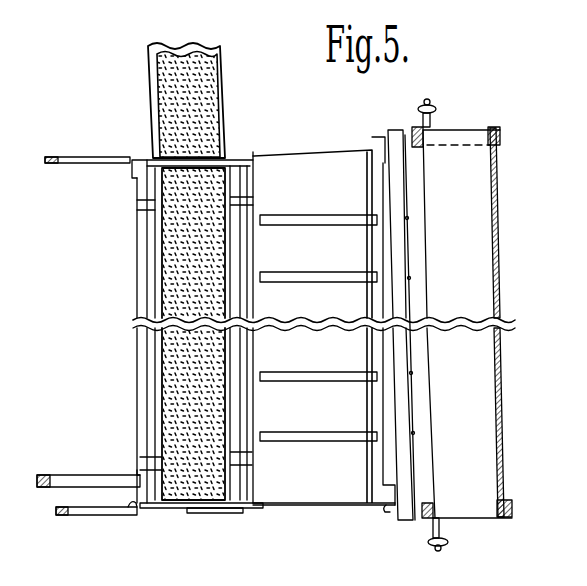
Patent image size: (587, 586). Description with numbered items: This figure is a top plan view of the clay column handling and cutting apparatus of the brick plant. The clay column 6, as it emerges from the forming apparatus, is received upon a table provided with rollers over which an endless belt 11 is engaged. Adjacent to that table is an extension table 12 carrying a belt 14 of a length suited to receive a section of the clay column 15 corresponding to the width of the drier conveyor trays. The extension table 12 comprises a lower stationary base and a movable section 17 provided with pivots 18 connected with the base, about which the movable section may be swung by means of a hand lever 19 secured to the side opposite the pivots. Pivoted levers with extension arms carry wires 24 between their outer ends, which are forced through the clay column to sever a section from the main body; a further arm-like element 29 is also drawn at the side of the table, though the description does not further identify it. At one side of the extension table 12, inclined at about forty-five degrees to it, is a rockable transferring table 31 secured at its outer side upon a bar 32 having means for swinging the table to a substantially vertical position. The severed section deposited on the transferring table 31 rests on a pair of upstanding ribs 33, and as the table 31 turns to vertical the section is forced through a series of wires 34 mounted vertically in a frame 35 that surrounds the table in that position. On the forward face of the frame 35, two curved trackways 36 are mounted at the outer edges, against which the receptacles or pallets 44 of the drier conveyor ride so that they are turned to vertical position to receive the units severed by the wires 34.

The clay column 6 is at (216, 90).
The endless belt 11 is at (223, 60).
The extension table 12 is at (261, 510).
The belt 14 is at (154, 392).
The section of the clay column 15 is at (212, 195).
The movable section 17 is at (252, 220).
The pivots 18 is at (239, 514).
The hand lever 19 is at (45, 476).
The wires 24 is at (130, 515).
The arm 29 is at (127, 165).
The transferring table 31 is at (317, 497).
The bar 32 is at (384, 513).
The upstanding ribs 33 is at (310, 220).
The wires 34 is at (410, 278).
The frame 35 is at (403, 526).
The curved trackways 36 is at (412, 131).
The receptacles or pallets 44 is at (497, 214).